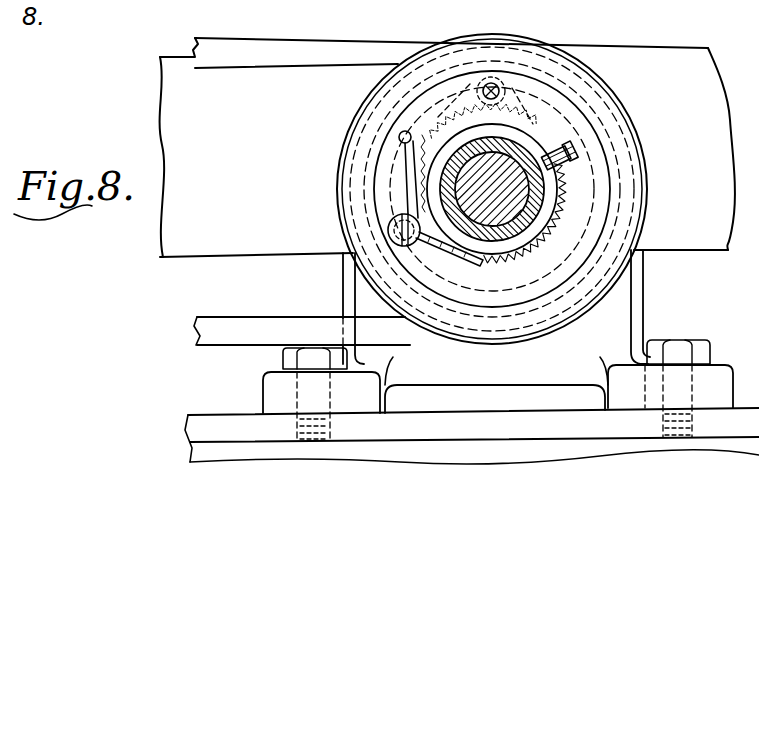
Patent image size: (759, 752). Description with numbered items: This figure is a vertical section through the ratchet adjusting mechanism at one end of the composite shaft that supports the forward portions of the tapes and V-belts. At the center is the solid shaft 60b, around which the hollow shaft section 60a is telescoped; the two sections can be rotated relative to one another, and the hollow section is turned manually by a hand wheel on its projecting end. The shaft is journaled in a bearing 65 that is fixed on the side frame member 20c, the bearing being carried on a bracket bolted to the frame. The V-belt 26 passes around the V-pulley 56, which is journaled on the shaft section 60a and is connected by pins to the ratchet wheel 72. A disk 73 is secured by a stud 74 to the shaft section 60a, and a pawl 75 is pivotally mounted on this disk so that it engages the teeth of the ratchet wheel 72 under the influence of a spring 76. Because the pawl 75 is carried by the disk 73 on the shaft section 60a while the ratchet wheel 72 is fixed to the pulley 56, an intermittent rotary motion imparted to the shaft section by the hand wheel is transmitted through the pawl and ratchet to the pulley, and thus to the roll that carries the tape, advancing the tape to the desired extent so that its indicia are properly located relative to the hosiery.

The V-belt 26 is at (390, 46).
The V-pulley 56 is at (489, 55).
The ratchet wheel 72 is at (532, 125).
The disk 73 is at (593, 145).
The stud 74 is at (573, 148).
The pawl 75 is at (432, 112).
The spring 76 is at (403, 182).
The hollow shaft section 60a is at (530, 217).
The solid shaft 60b is at (517, 200).
The bearing 65 is at (612, 303).
The side frame member 20c is at (723, 7).